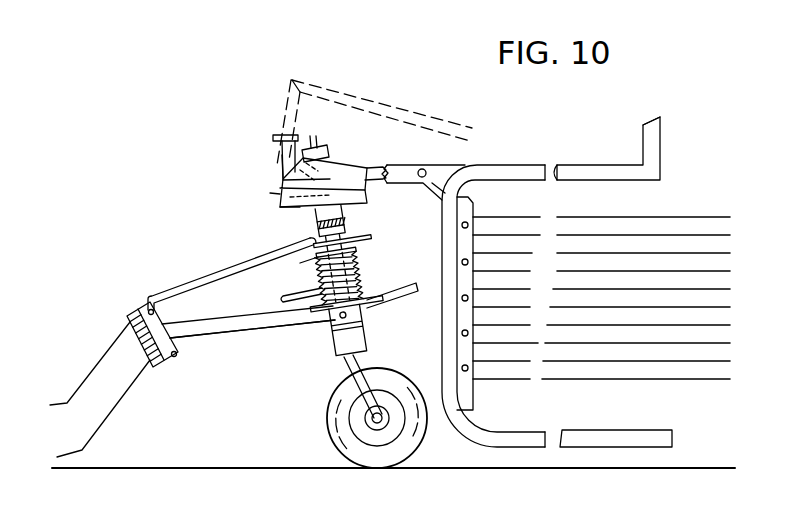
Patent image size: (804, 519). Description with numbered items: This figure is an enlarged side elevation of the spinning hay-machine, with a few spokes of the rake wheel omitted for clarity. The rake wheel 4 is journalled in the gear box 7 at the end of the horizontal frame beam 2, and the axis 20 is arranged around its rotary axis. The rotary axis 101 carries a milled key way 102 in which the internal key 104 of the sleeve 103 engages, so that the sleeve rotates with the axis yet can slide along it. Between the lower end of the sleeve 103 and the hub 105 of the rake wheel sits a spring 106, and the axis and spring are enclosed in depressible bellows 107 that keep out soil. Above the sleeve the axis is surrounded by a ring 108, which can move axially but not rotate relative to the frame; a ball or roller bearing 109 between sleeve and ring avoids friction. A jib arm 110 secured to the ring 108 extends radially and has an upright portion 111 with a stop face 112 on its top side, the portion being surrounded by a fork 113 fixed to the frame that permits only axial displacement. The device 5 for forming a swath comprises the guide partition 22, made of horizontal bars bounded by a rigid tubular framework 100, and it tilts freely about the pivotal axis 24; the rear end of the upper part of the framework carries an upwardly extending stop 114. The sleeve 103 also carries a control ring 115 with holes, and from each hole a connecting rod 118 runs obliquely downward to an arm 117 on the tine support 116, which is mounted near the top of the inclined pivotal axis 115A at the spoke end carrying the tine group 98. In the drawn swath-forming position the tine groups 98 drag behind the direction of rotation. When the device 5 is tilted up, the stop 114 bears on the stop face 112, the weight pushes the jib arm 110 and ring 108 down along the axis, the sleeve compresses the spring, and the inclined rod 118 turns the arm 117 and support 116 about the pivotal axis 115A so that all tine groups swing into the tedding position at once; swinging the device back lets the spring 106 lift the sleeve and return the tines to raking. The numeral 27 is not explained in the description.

The frame beam 2 is at (337, 163).
The rake wheel 4 is at (253, 331).
The device for the formation of a swath 5 is at (530, 147).
The gear box 7 is at (352, 188).
The axis 20 is at (313, 137).
The guide partition 22 is at (707, 200).
The pivotal axis 24 is at (437, 151).
The arm lower edge 27 is at (228, 328).
The tine group 98 is at (88, 366).
The tubular framework 100 is at (397, 107).
The rotary axis 101 is at (368, 317).
The key way 102 is at (363, 275).
The sleeve 103 is at (370, 243).
The internal key 104 is at (357, 252).
The hub 105 is at (317, 315).
The spring 106 is at (320, 270).
The bellows 107 is at (297, 292).
The ring 108 is at (347, 208).
The bearing 109 is at (342, 225).
The jib arm 110 is at (293, 217).
The portion 111 is at (280, 152).
The stop face 112 is at (273, 138).
The fork 113 is at (273, 197).
The stop 114 is at (290, 112).
The ring 115 is at (300, 263).
The pivotal axis 115A is at (170, 360).
The tine support 116 is at (129, 311).
The arm 117 is at (155, 307).
The connecting rod 118 is at (213, 270).